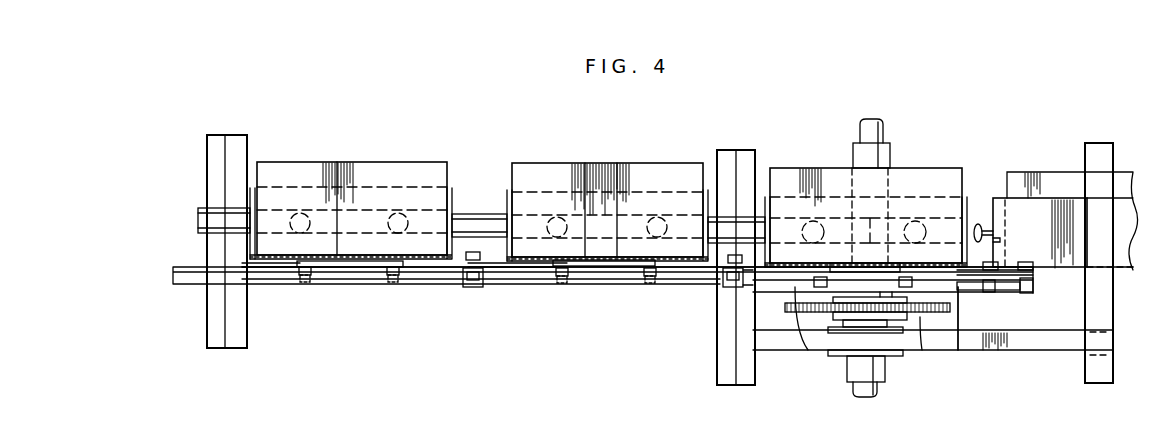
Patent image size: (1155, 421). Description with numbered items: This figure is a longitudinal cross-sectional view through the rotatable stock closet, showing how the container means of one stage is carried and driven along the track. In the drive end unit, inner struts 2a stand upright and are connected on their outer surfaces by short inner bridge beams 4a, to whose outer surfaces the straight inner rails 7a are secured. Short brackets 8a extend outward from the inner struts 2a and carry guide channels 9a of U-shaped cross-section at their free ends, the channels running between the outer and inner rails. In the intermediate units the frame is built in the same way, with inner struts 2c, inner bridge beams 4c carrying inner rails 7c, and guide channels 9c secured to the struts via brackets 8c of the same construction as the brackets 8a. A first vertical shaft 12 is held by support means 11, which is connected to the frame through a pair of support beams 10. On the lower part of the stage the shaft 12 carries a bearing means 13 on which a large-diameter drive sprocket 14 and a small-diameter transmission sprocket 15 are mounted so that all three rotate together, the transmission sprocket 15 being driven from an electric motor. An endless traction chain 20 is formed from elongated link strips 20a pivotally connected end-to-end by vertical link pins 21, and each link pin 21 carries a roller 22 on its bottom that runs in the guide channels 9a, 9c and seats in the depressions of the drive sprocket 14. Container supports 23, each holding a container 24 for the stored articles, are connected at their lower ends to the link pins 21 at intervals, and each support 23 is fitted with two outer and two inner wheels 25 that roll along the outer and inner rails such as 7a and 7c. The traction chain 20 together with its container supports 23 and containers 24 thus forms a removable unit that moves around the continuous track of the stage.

The inner strut 2c is at (730, 150).
The inner strut 2a is at (1086, 143).
The inner bridge beam 4c is at (233, 206).
The inner bridge beam 4a is at (750, 234).
The inner rail 7c is at (212, 225).
The inner rail 7a is at (812, 228).
The bracket 8c is at (723, 278).
The bracket 8a is at (750, 280).
The guide channel 9c is at (452, 288).
The guide channel 9a is at (800, 340).
The support beam 10 is at (772, 345).
The support means 11 is at (838, 356).
The first vertical shaft 12 is at (880, 135).
The bearing means 13 is at (930, 333).
The drive sprocket 14 is at (986, 291).
The transmission sprocket 15 is at (968, 335).
The endless traction chain 20 is at (686, 272).
The link strip 20a is at (300, 262).
The link pin 21 is at (326, 275).
The roller 22 is at (306, 282).
The container support 23 is at (259, 165).
The container 24 is at (342, 162).
The wheel 25 is at (301, 213).